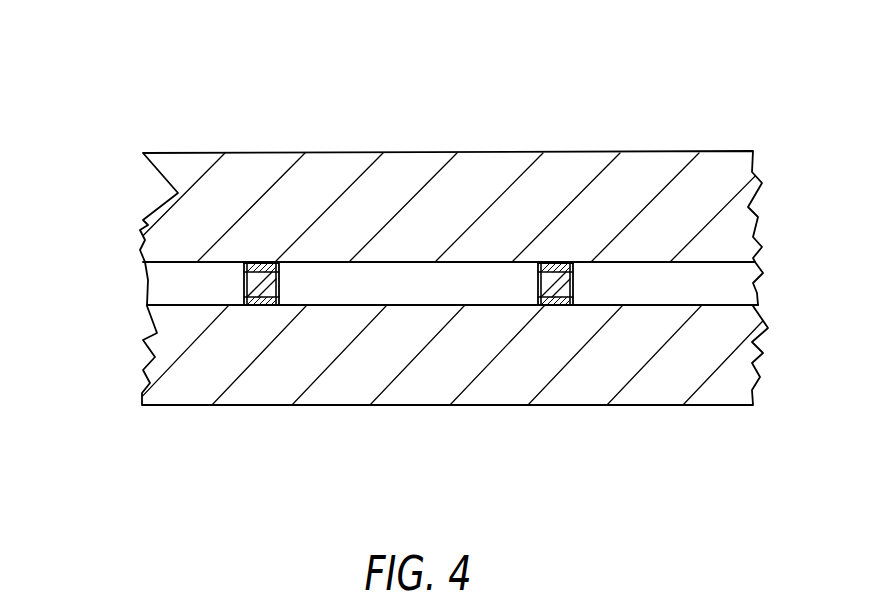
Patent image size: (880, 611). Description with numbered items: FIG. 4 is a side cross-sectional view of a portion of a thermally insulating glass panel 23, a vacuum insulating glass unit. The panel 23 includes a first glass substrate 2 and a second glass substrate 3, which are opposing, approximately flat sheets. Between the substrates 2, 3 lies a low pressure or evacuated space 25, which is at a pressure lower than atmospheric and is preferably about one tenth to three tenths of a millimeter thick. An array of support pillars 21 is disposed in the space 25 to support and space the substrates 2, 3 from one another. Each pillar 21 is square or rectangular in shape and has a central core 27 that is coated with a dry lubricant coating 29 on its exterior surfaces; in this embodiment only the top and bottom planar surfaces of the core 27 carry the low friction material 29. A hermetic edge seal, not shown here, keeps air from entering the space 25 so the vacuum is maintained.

The first glass substrate 2 is at (643, 385).
The second glass substrate 3 is at (550, 167).
The support pillar 21 is at (237, 281).
The thermally insulating glass panel 23 is at (160, 112).
The low pressure space 25 is at (397, 290).
The central core 27 is at (279, 287).
The dry lubricant coating 29 is at (243, 263).